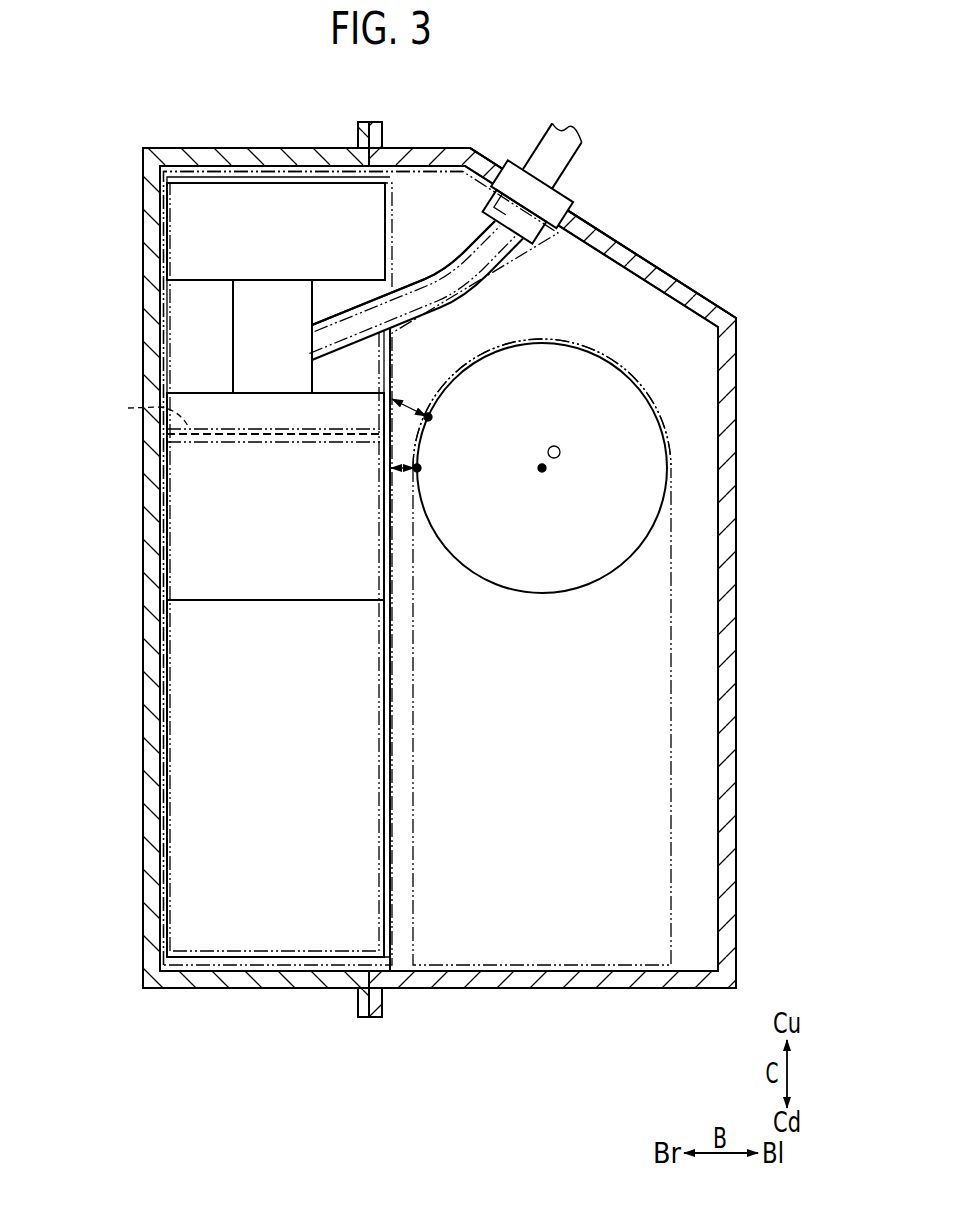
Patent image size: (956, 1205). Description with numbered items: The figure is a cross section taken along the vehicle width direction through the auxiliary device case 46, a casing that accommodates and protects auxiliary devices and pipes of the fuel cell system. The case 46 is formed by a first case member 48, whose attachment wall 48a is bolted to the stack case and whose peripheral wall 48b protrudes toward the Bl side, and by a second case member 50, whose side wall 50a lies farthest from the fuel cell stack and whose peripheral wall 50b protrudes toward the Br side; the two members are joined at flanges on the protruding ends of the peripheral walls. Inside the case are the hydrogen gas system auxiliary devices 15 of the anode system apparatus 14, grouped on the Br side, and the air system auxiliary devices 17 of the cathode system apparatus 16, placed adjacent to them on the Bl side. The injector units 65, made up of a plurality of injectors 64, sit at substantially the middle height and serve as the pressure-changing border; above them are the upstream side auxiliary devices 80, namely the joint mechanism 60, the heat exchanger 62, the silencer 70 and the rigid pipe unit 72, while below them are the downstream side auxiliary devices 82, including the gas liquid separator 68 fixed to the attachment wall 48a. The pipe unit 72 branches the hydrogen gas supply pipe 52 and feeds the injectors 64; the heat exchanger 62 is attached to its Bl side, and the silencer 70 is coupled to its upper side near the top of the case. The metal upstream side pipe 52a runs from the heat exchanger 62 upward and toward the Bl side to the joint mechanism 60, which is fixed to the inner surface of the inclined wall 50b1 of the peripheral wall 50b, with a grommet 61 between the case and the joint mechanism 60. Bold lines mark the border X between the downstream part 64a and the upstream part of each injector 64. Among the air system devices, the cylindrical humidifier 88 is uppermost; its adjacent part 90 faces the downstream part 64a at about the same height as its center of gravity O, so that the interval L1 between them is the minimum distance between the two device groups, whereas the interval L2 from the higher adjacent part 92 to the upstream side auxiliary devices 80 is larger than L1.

The anode system apparatus 14 is at (314, 569).
The hydrogen gas system auxiliary devices 15 is at (219, 166).
The cathode system apparatus 16 is at (542, 403).
The air system auxiliary devices 17 is at (550, 335).
The auxiliary device case 46 is at (330, 1067).
The first case member 48 is at (330, 993).
The attachment wall 48a is at (152, 529).
The peripheral wall 48b is at (250, 160).
The second case member 50 is at (403, 993).
The side wall 50a is at (723, 515).
The peripheral wall 50b is at (520, 990).
The inclined wall 50b1 is at (572, 226).
The hydrogen gas supply pipe 52 is at (403, 273).
The upstream side pipe 52a is at (440, 271).
The joint mechanism 60 is at (488, 198).
The grommet 61 is at (517, 168).
The heat exchanger 62 is at (271, 300).
The injector 64 is at (182, 468).
The downstream part 64a is at (185, 563).
The injector unit 65 is at (275, 496).
The gas liquid separator 68 is at (182, 692).
The silencer 70 is at (180, 228).
The pipe unit 72 is at (182, 321).
The upstream side auxiliary devices 80 is at (327, 178).
The downstream side auxiliary devices 82 is at (216, 958).
The humidifier 88 is at (546, 585).
The adjacent part 90 is at (421, 470).
The adjacent part 92 is at (432, 420).
The interval L1 is at (400, 472).
The interval L2 is at (409, 396).
The border X is at (149, 410).
The center of gravity O is at (554, 452).